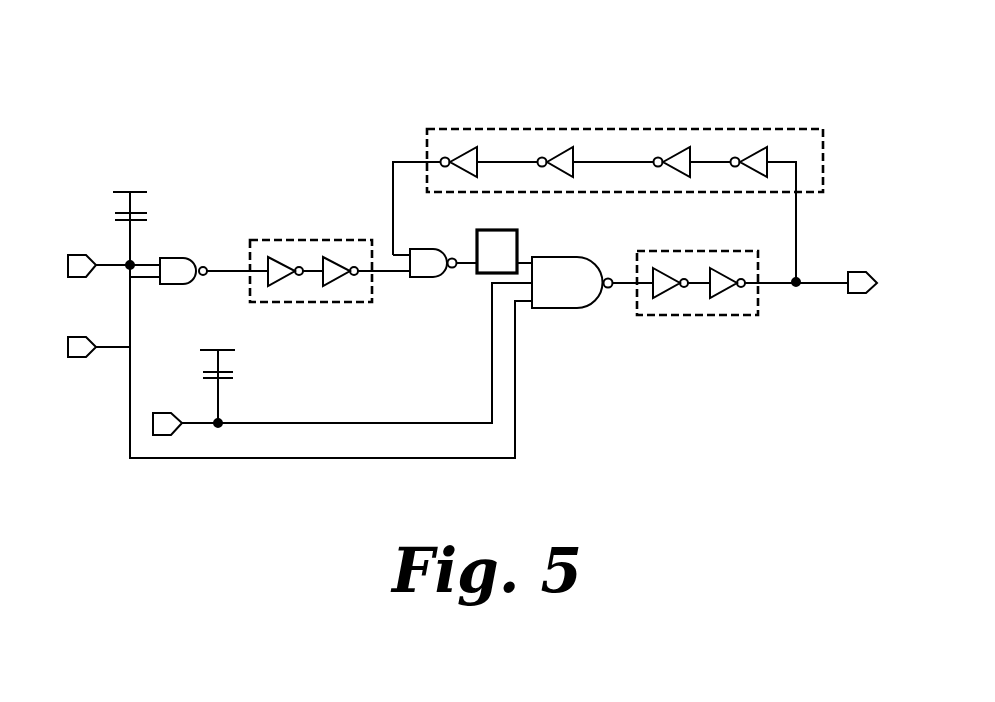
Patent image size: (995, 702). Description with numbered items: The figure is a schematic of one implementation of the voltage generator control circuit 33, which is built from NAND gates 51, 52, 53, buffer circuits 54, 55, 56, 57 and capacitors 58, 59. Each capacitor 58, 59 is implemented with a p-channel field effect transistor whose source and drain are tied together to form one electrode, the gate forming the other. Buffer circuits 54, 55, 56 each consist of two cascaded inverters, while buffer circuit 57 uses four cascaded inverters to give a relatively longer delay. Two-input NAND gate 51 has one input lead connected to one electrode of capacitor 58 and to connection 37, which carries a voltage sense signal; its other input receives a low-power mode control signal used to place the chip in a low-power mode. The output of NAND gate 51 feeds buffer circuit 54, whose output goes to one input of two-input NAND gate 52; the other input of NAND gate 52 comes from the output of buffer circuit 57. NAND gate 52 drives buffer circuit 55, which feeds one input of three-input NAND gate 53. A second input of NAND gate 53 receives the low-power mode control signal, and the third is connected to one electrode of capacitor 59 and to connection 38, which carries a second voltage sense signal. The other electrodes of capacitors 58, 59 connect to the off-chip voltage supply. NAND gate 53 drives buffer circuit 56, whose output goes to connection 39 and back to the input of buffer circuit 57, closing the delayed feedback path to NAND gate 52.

The voltage generator control circuit (VGCC) 33 is at (641, 89).
The connection 37 is at (110, 269).
The connection 38 is at (193, 420).
The connection 39 is at (815, 285).
The two-input NAND gate 51 is at (187, 257).
The two-input NAND gate 52 is at (422, 278).
The three-input NAND gate 53 is at (562, 309).
The buffer circuit 54 is at (340, 303).
The buffer circuit 55 is at (517, 238).
The buffer circuit 56 is at (712, 316).
The buffer circuit 57 is at (750, 129).
The capacitor 58 is at (140, 228).
The capacitor 59 is at (227, 378).